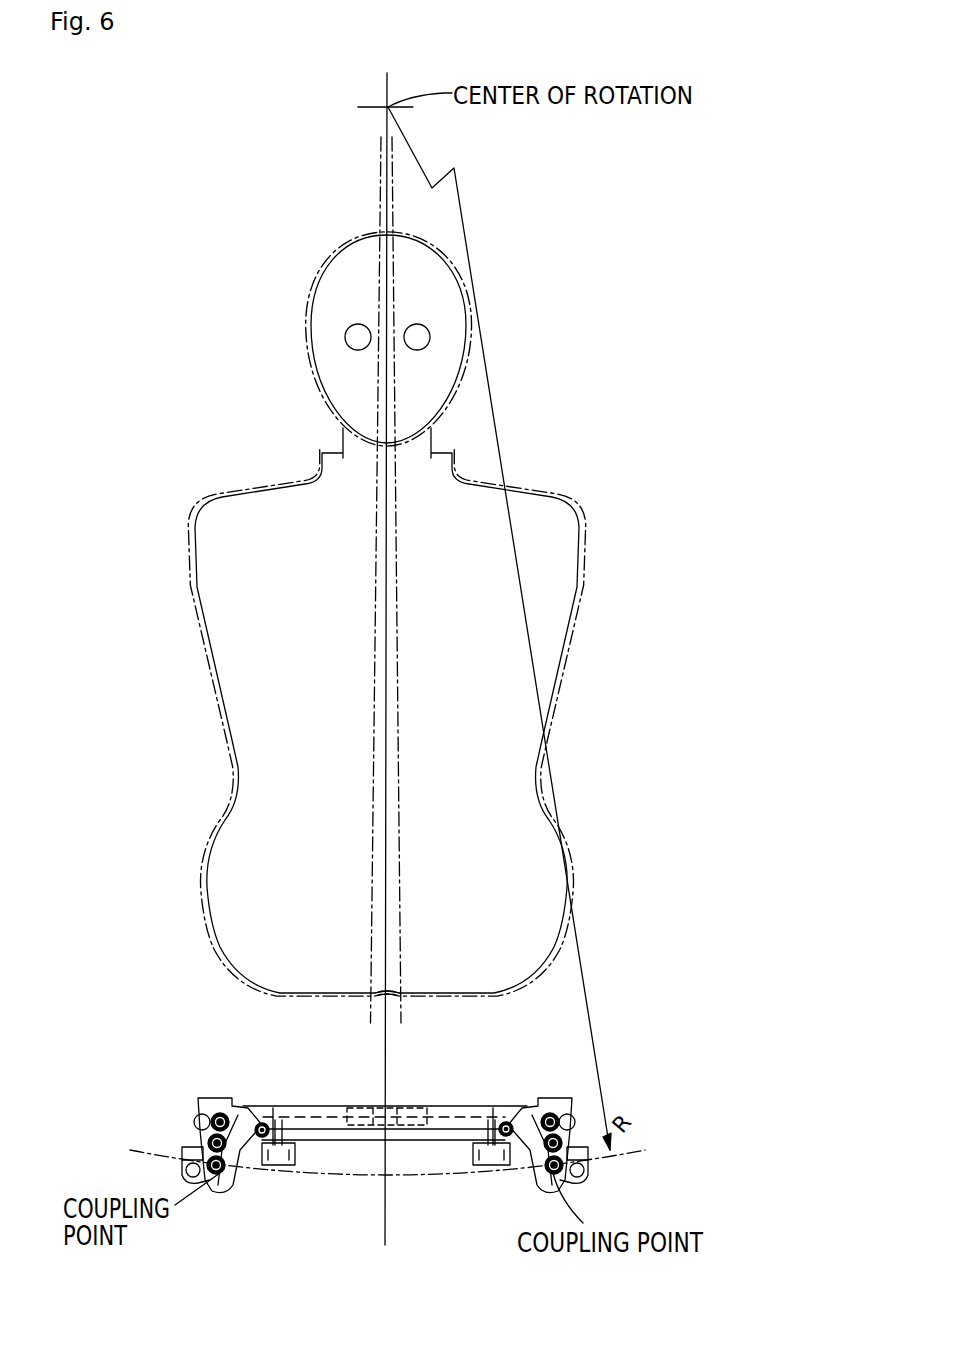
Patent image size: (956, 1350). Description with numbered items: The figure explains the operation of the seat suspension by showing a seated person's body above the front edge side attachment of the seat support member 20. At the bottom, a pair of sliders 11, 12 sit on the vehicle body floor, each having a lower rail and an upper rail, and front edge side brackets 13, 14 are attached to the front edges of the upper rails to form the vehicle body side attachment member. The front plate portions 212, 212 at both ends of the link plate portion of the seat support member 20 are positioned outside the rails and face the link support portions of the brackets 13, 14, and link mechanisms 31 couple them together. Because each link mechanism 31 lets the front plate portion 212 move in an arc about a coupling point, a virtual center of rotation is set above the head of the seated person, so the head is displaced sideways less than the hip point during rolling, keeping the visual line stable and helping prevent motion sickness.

The seat support member 20 is at (252, 1110).
The front plate portion 212 is at (207, 1110).
The link mechanism 31 is at (188, 1122).
The front edge side bracket 14 is at (258, 1133).
The slider 12 is at (280, 1165).
The slider 11 is at (492, 1168).
The front edge side bracket 13 is at (512, 1137).